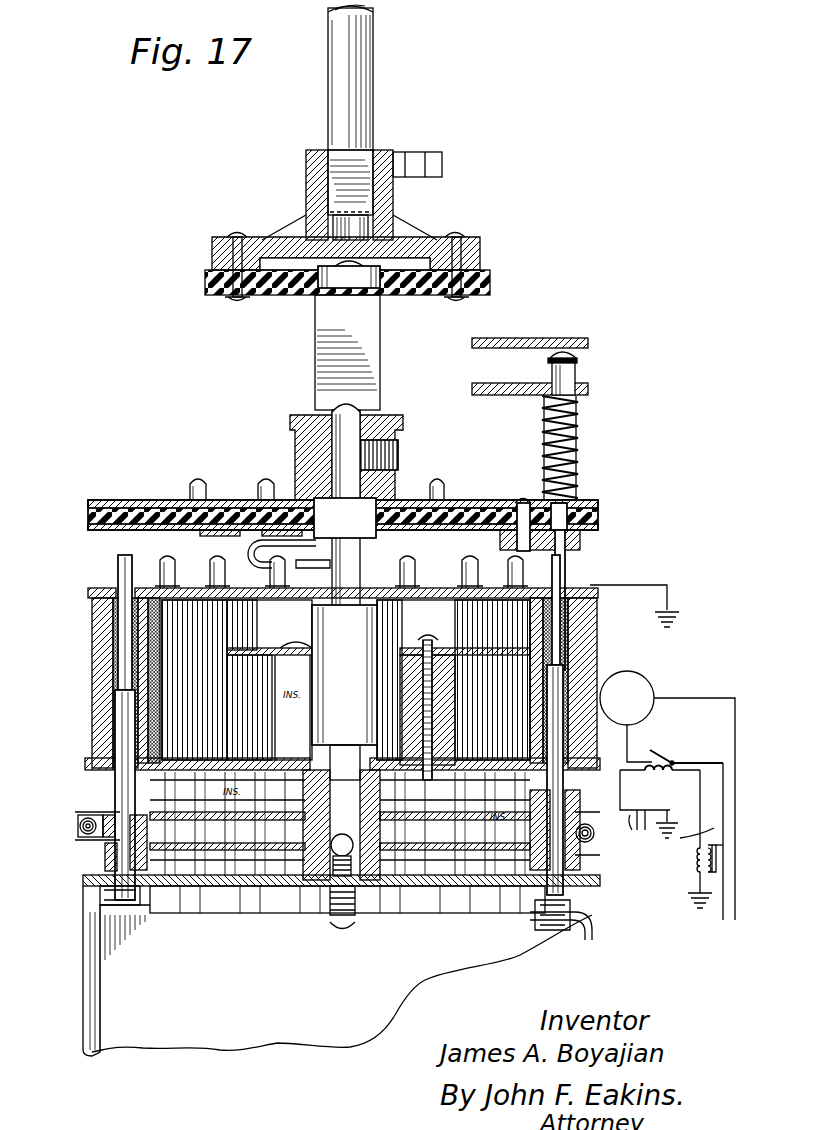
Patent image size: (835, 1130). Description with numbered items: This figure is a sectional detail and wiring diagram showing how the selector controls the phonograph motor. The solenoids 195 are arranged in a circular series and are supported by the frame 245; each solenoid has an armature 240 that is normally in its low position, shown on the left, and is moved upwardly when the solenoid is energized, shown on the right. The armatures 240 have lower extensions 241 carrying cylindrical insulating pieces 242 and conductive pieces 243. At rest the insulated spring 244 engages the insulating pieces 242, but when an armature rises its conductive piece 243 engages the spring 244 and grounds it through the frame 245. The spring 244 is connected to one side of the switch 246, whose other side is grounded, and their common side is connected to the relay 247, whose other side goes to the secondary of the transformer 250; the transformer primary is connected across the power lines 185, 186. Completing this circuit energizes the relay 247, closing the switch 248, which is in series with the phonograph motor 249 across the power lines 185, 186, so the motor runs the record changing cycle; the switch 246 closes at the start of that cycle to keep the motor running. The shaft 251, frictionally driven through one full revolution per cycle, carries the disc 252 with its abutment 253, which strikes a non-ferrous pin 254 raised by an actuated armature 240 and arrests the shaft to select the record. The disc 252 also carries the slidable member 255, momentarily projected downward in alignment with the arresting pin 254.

The shaft 251 is at (372, 72).
The disc 252 is at (478, 496).
The abutment 253 is at (580, 548).
The non-ferrous pins 254 is at (440, 560).
The slidable member 255 is at (578, 426).
The frame 245 is at (92, 632).
The solenoids 195 is at (115, 698).
The armature 240 is at (120, 730).
The insulated spring 244 is at (80, 830).
The lower extensions 241 is at (105, 856).
The insulating pieces 242 is at (575, 812).
The conductive pieces 243 is at (142, 900).
The switch 246 is at (608, 830).
The relay 247 is at (657, 776).
The switch of the relay 248 is at (660, 752).
The phonograph motor 249 is at (632, 680).
The power line 185 is at (735, 718).
The power line 186 is at (690, 848).
The transformer 250 is at (698, 875).